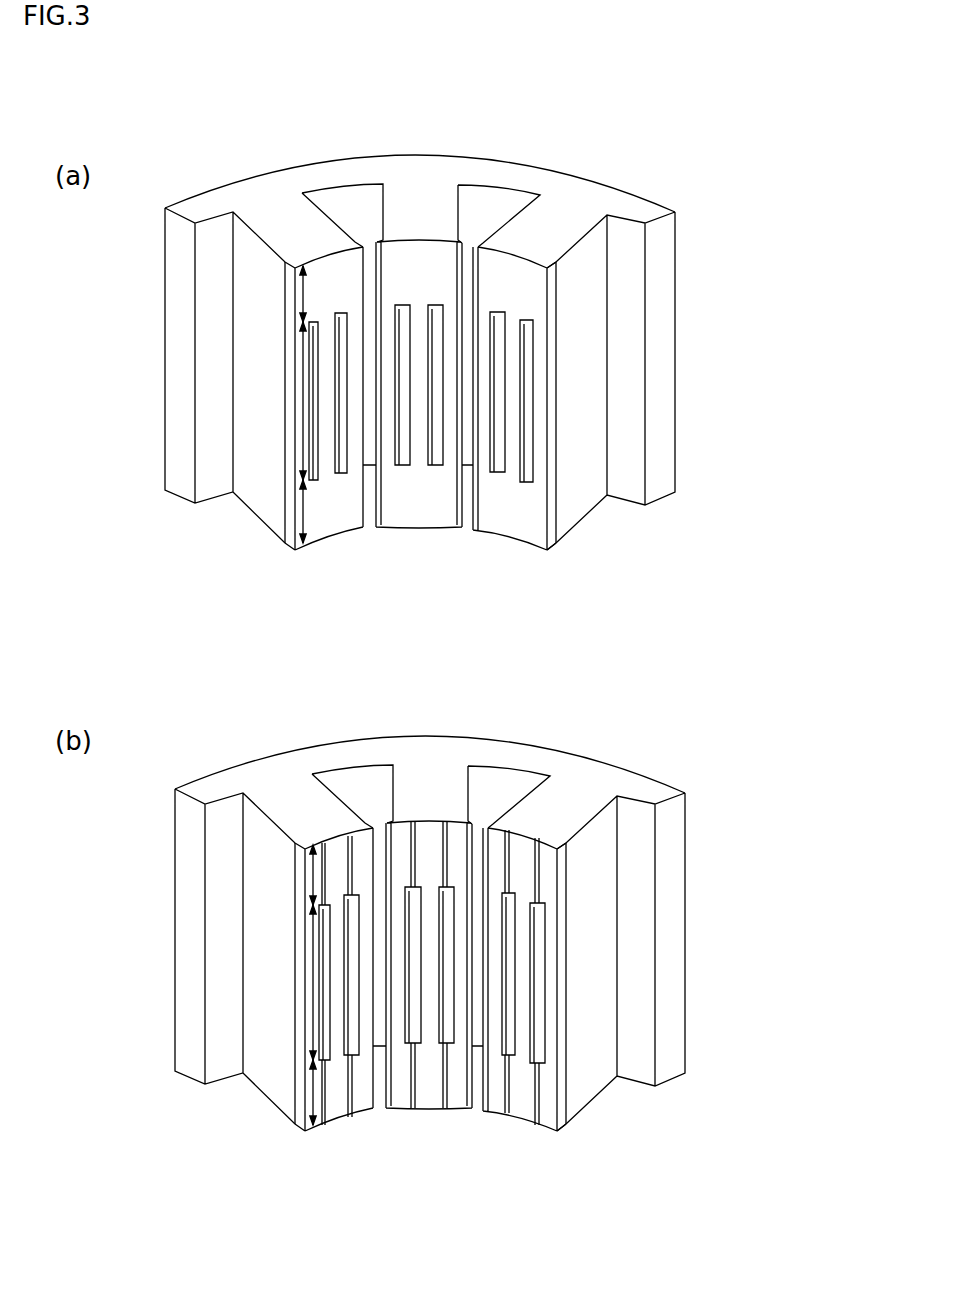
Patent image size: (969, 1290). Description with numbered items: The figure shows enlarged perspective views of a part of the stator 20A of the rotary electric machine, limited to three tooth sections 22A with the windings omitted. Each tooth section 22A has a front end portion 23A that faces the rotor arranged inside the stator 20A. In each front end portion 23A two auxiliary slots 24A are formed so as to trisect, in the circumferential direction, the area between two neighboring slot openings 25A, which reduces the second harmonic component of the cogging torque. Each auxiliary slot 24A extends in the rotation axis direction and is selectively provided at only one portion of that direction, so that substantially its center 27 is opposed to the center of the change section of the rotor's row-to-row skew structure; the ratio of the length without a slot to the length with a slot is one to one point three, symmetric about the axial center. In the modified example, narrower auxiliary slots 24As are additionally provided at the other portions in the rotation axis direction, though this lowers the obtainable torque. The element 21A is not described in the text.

The stator 20A is at (651, 140).
The core back (yoke block) 21A is at (622, 477).
The tooth section 22A is at (550, 225).
The front end portion 23A is at (508, 282).
The auxiliary slot 24A is at (500, 370).
The auxiliary slot having a smaller width 24As is at (538, 880).
The slot opening 25A is at (470, 250).
The center of the auxiliary slot 27 is at (437, 383).